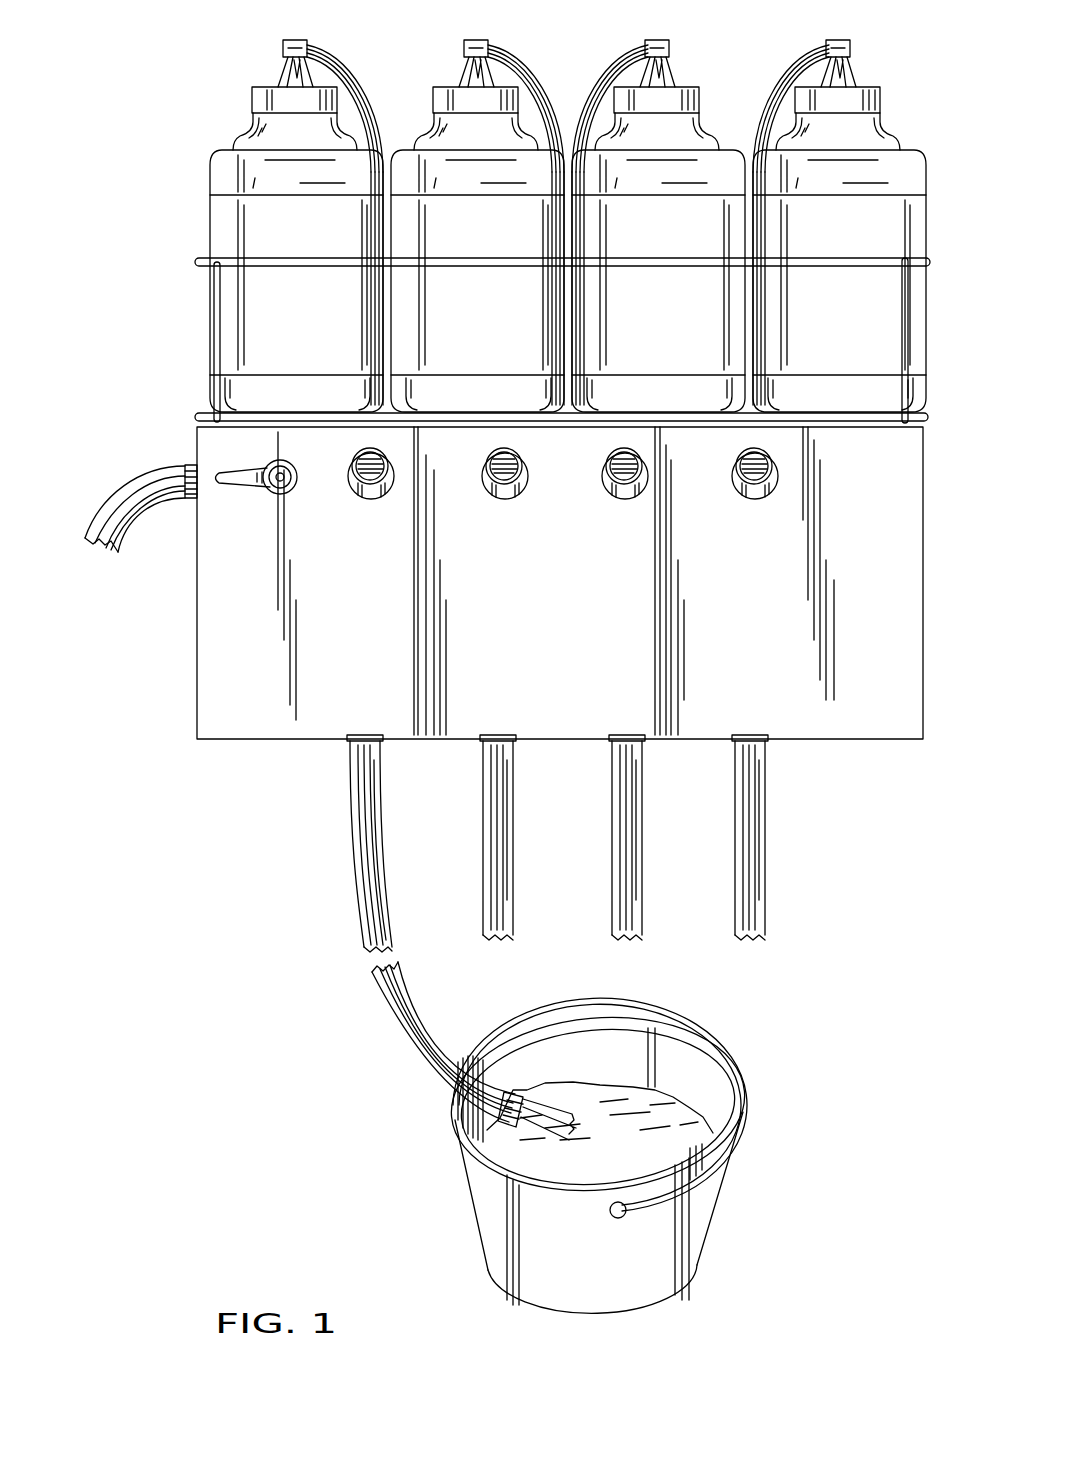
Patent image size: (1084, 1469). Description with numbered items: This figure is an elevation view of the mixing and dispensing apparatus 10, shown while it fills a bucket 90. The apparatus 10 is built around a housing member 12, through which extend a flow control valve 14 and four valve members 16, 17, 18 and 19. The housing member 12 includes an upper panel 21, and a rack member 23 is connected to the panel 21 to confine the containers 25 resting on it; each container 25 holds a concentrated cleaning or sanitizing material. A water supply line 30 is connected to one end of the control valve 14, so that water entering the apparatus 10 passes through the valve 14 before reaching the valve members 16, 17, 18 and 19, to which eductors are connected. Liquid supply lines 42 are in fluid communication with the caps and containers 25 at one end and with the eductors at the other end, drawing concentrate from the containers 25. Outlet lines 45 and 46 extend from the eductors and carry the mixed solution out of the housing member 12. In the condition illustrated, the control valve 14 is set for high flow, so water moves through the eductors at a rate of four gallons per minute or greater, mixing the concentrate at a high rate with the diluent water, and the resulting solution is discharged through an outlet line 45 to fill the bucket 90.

The mixing and dispensing apparatus 10 is at (186, 432).
The housing member 12 is at (197, 683).
The flow control valve 14 is at (258, 490).
The valve member 16 is at (383, 500).
The valve member 17 is at (518, 500).
The valve member 18 is at (625, 500).
The valve member 19 is at (760, 500).
The upper panel 21 is at (203, 410).
The rack member 23 is at (197, 260).
The container 25 is at (316, 321).
The water supply line 30 is at (103, 510).
The liquid supply line 42 is at (341, 57).
The outlet line 45 is at (355, 830).
The outlet line 46 is at (487, 830).
The bucket 90 is at (470, 1205).